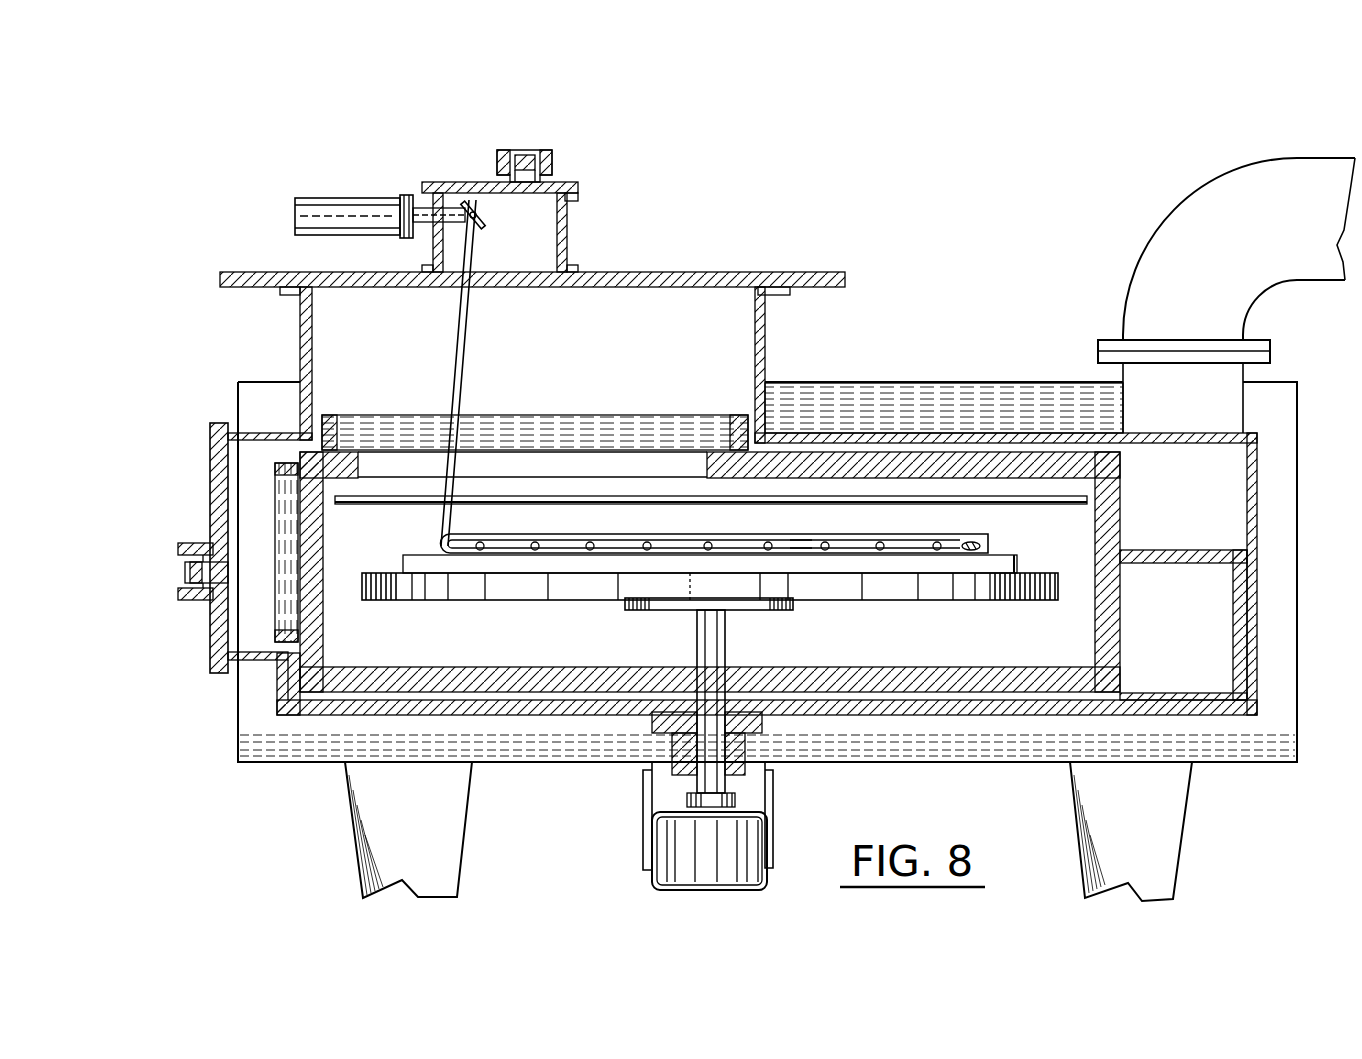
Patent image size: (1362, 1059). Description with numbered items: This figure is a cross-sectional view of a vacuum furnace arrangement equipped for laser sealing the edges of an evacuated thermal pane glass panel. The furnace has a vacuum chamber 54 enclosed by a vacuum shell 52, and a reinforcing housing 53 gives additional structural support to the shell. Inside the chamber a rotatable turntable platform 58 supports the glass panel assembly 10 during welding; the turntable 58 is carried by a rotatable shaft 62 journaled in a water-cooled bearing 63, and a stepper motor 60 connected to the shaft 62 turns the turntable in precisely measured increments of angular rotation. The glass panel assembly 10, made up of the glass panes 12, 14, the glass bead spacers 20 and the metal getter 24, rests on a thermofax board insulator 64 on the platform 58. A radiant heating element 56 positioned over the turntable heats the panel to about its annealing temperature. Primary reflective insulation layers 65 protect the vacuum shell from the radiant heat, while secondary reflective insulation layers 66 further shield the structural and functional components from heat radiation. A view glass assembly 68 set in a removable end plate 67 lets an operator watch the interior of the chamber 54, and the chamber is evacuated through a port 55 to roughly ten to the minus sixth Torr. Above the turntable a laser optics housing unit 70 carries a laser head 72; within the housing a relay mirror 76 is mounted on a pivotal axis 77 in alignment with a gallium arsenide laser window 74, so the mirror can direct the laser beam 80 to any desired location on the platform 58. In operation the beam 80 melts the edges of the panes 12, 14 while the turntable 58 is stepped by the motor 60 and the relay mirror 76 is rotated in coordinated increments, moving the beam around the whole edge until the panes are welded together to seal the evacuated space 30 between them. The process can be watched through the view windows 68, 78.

The glass panel assembly 10 is at (736, 539).
The glass pane 12 is at (1017, 556).
The glass pane 14 is at (948, 536).
The glass bead spacers 20 is at (880, 546).
The metal getter 24 is at (985, 547).
The evacuated space 30 is at (800, 546).
The vacuum shell 52 is at (905, 432).
The reinforcing housing 53 is at (1300, 455).
The vacuum chamber 54 is at (731, 572).
The port 55 is at (1145, 243).
The radiant heating element 56 is at (978, 497).
The turntable platform 58 is at (705, 588).
The stepper motor 60 is at (652, 868).
The rotatable shaft 62 is at (697, 640).
The water-cooled bearing 63 is at (775, 762).
The thermofax board insulator 64 is at (948, 618).
The primary reflective insulation layers 65 is at (1120, 470).
The secondary reflective insulation layers 66 is at (658, 412).
The removable end plate 67 is at (210, 503).
The view glass assembly 68 is at (186, 566).
The laser optics housing unit 70 is at (568, 240).
The laser head 72 is at (365, 205).
The gallium arsenide laser window 74 is at (420, 220).
The relay mirror 76 is at (478, 200).
The pivotal axis 77 is at (487, 215).
The view window 78 is at (530, 150).
The laser beam 80 is at (463, 337).